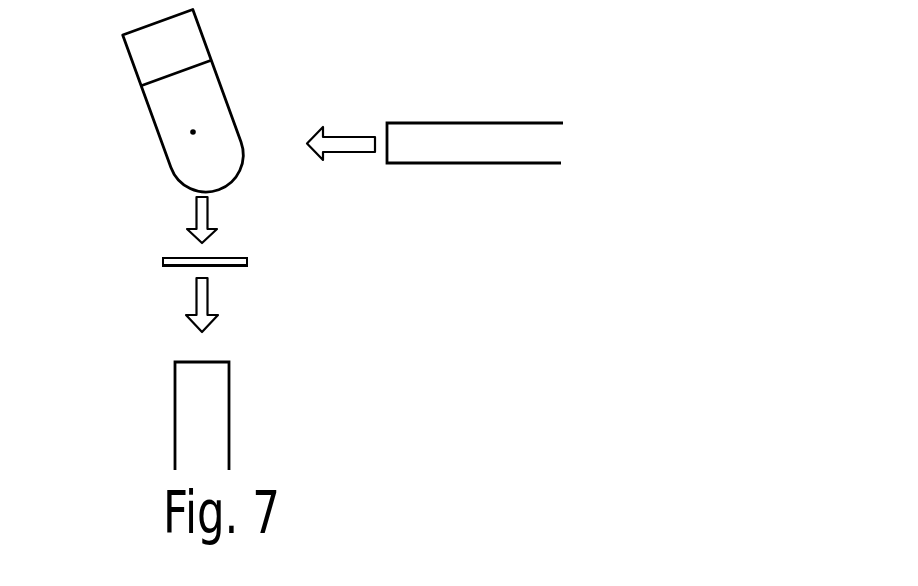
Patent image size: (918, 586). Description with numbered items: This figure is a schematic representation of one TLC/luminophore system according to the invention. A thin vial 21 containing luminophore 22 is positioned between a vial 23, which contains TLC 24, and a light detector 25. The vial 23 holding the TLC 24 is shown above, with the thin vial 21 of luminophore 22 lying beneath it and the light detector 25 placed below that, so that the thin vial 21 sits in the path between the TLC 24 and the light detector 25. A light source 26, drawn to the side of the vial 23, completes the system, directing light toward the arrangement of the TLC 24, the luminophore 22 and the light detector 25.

The thin vial 21 is at (247, 256).
The luminophore 22 is at (175, 263).
The vial 23 is at (210, 47).
The TLC 24 is at (193, 132).
The light detector 25 is at (229, 414).
The light source 26 is at (528, 163).